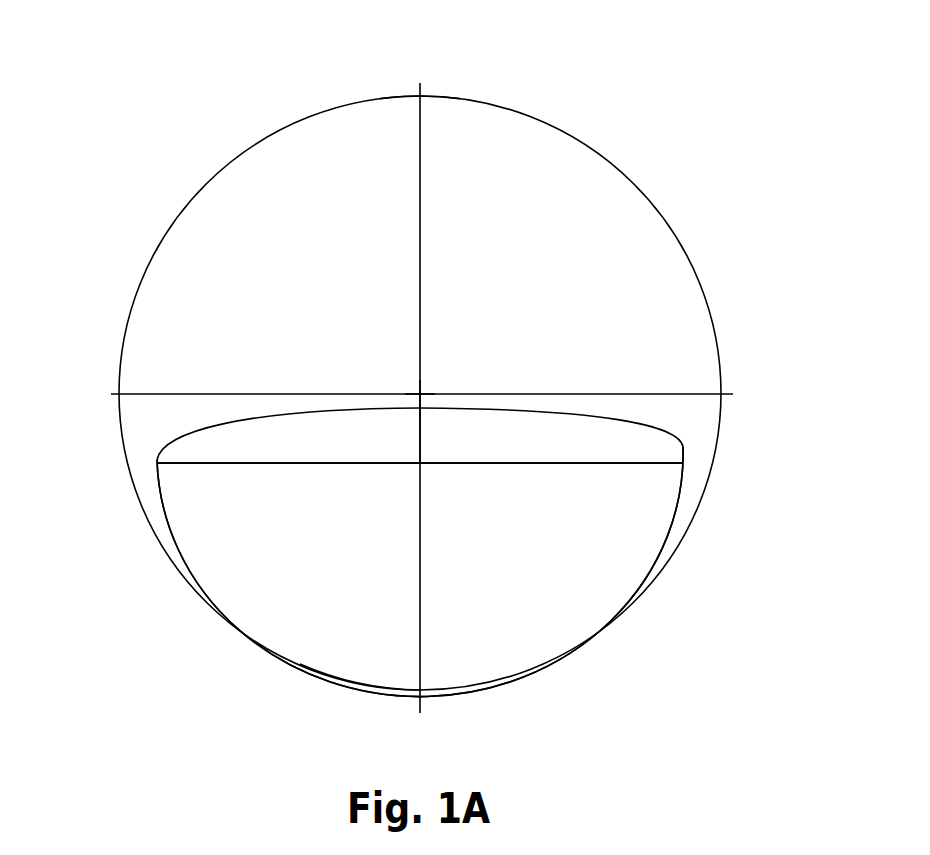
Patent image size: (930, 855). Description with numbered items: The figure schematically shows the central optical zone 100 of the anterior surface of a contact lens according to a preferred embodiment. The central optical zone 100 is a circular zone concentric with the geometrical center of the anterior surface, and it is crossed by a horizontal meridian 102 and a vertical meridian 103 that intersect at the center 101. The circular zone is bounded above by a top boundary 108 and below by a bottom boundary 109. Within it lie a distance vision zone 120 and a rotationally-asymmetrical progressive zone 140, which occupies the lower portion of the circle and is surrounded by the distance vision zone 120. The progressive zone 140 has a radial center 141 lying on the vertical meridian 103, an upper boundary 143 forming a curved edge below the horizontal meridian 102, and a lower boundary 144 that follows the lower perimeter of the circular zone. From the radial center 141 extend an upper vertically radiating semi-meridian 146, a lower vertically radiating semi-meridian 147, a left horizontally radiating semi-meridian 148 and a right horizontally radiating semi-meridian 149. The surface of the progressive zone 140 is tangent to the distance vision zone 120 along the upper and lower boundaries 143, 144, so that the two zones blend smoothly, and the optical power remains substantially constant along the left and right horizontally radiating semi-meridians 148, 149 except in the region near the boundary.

The central optical zone 100 is at (735, 90).
The center 101 is at (420, 394).
The horizontal meridian 102 is at (147, 395).
The vertical meridian 103 is at (419, 94).
The top boundary 108 is at (458, 97).
The bottom boundary 109 is at (329, 672).
The distance vision zone 120 is at (588, 262).
The rotationally-asymmetrical progressive zone 140 is at (494, 568).
The radial center 141 is at (423, 467).
The upper boundary 143 is at (517, 408).
The lower boundary 144 is at (180, 551).
The upper vertically radiating semi-meridian 146 is at (423, 425).
The lower vertically radiating semi-meridian 147 is at (420, 605).
The left horizontally radiating semi-meridian 148 is at (310, 463).
The right horizontally radiating semi-meridian 149 is at (637, 462).